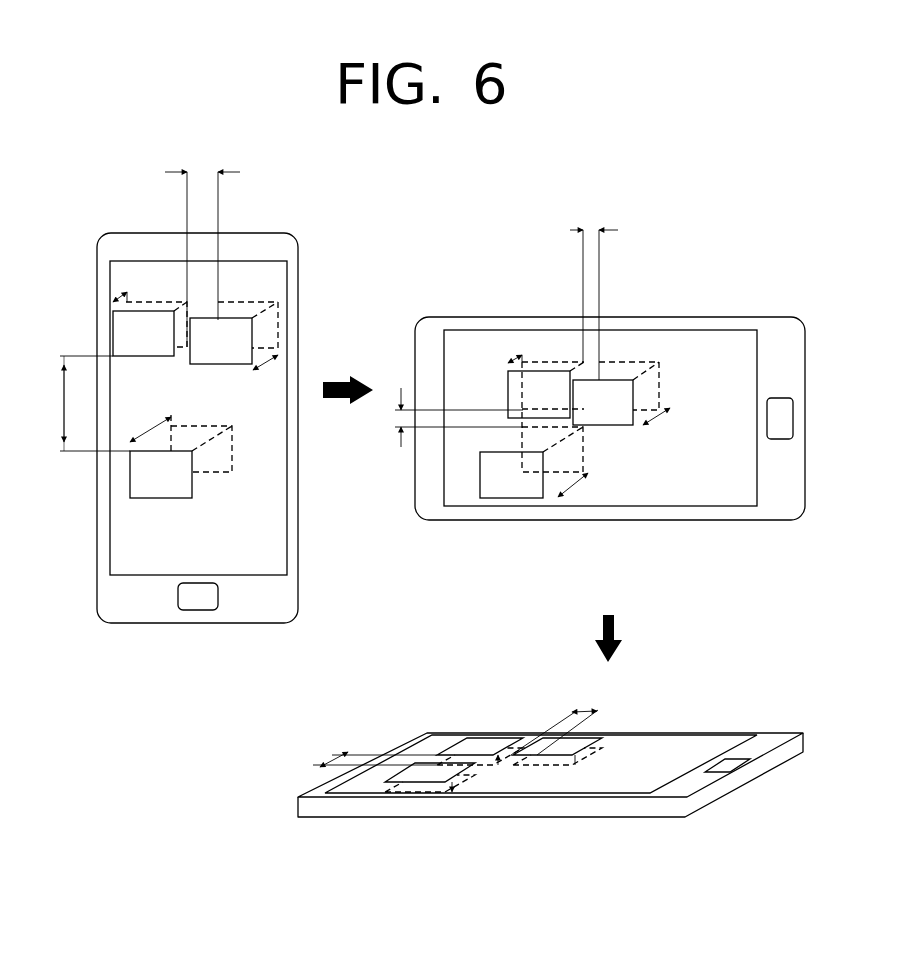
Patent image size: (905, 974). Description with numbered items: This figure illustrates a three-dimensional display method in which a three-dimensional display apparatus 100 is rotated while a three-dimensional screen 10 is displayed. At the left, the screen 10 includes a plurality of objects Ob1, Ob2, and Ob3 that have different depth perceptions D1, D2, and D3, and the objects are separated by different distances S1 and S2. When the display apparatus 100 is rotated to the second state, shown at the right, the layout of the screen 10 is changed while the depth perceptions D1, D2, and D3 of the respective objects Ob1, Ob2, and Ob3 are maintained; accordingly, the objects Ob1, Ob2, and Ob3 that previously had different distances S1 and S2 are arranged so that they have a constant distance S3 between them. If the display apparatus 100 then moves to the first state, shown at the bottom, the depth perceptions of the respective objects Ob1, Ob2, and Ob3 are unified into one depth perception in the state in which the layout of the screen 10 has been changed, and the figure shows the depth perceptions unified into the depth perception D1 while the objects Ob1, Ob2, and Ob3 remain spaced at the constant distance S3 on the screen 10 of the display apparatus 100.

The 3D display apparatus 100 is at (118, 233).
The 3D screen 10 is at (275, 275).
The object Ob1 is at (150, 317).
The object Ob2 is at (238, 327).
The object Ob3 is at (138, 488).
The distance S1 is at (202, 246).
The distance S2 is at (82, 403).
The constant distance S3 is at (459, 486).
The depth perception D1 is at (510, 838).
The depth perception D2 is at (467, 398).
The depth perception D3 is at (356, 459).